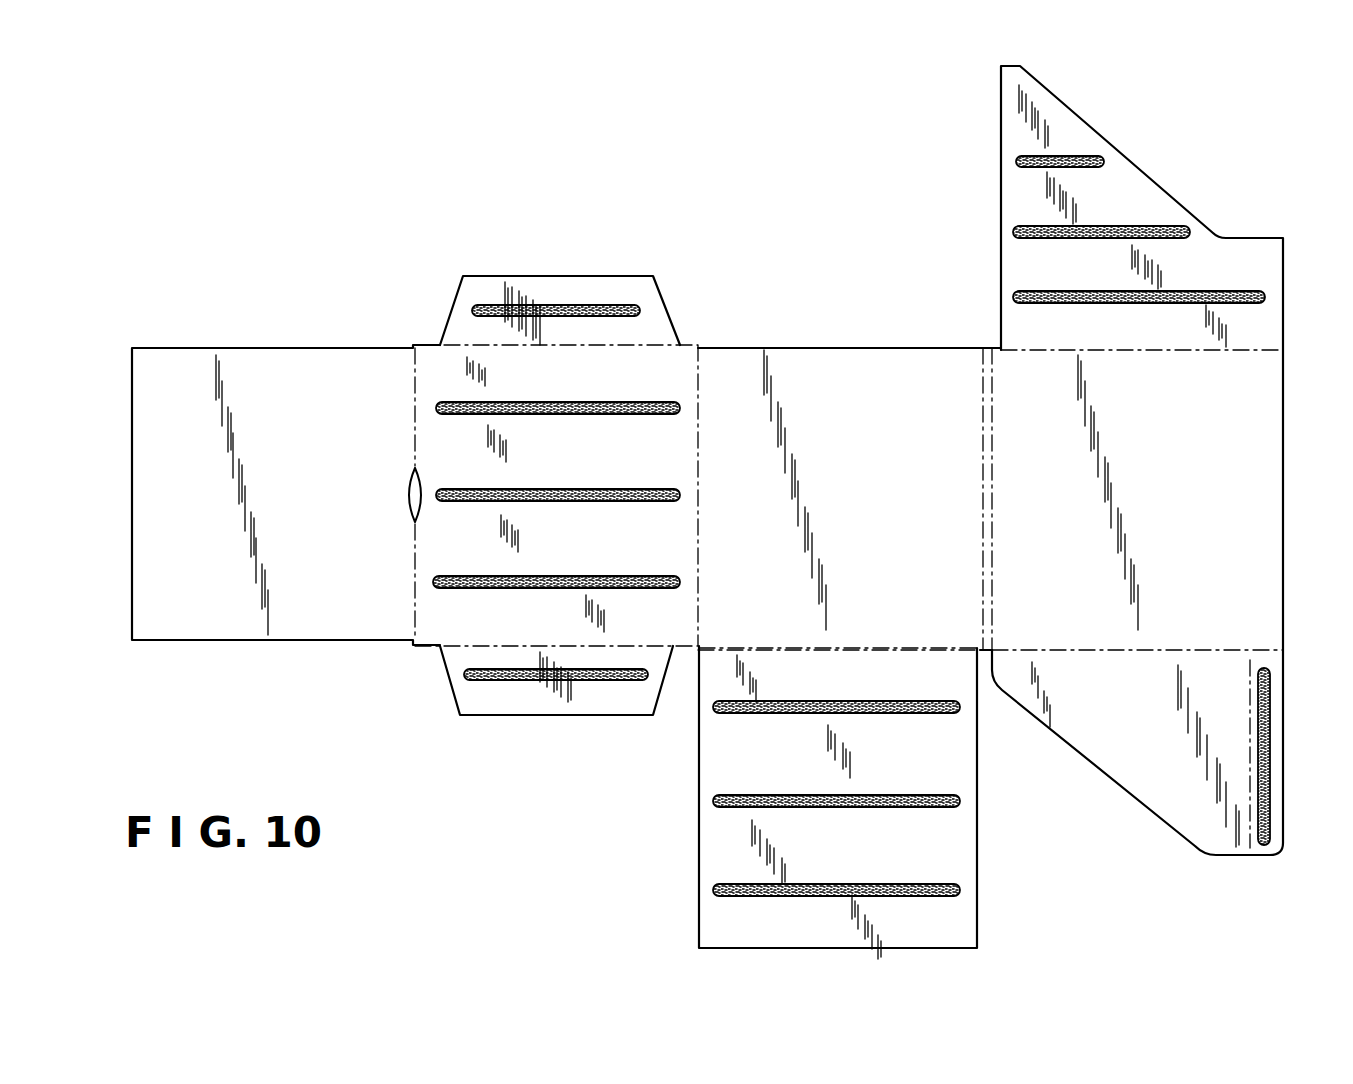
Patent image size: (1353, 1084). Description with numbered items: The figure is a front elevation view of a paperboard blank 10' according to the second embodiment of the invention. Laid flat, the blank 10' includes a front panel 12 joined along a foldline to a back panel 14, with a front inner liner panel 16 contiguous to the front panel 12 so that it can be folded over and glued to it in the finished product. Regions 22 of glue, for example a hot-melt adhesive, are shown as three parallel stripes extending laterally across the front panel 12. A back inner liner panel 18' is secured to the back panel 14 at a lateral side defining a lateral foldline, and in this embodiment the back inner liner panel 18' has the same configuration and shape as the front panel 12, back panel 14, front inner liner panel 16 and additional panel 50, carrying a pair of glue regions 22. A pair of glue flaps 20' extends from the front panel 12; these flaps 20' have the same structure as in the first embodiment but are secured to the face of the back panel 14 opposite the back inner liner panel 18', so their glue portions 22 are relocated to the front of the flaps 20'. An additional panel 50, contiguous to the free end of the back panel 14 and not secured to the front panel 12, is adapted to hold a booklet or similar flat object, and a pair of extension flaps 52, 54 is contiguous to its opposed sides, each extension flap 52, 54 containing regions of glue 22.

The blank 10' is at (305, 290).
The front panel 12 is at (567, 456).
The back panel 14 is at (850, 484).
The front inner liner panel 16 is at (312, 503).
The back inner liner panel 18' is at (838, 802).
The glue flaps 20' is at (560, 469).
The regions of glue 22 is at (640, 305).
The additional panel 50 is at (1162, 427).
The extension flap 52 is at (1094, 279).
The extension flap 54 is at (1148, 722).